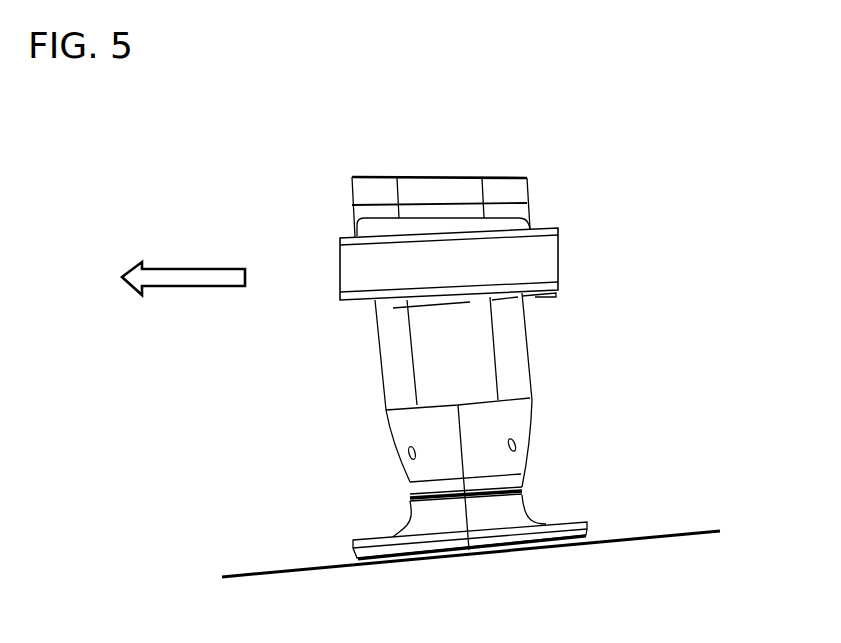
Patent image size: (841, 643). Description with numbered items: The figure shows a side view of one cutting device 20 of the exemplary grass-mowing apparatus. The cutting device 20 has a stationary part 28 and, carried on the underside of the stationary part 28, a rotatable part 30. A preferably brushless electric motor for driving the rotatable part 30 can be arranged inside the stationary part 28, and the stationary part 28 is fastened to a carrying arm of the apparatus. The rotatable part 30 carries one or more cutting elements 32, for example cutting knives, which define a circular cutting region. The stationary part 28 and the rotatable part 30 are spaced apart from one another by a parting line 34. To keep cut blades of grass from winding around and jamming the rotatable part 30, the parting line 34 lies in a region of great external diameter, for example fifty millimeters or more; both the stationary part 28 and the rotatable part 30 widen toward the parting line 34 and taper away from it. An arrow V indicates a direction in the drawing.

The cutting device 20 is at (480, 99).
The stationary part 28 is at (388, 445).
The rotatable part 30 is at (406, 526).
The cutting element 32 is at (630, 540).
The parting line 34 is at (528, 489).
The direction of movement V is at (176, 272).